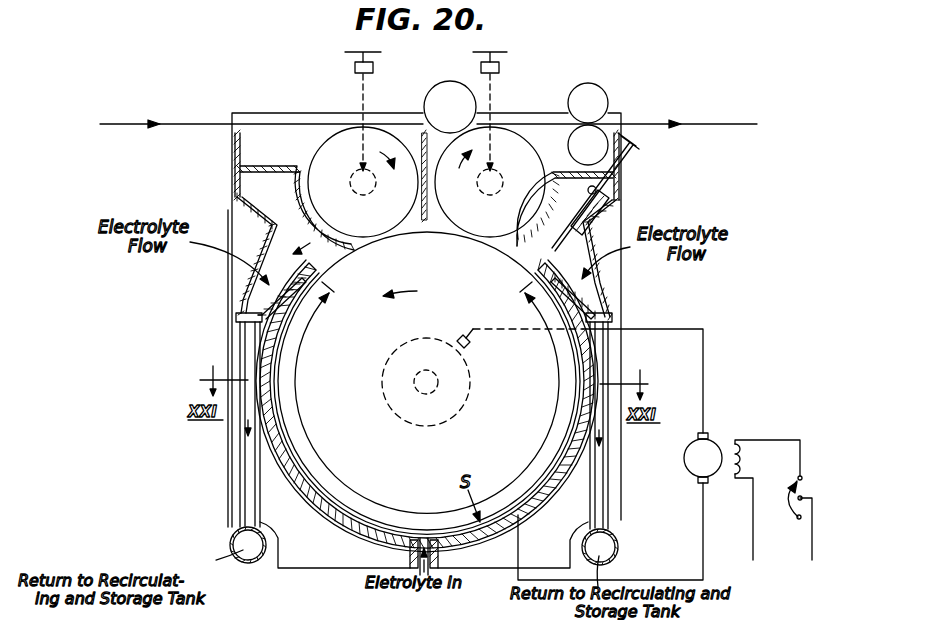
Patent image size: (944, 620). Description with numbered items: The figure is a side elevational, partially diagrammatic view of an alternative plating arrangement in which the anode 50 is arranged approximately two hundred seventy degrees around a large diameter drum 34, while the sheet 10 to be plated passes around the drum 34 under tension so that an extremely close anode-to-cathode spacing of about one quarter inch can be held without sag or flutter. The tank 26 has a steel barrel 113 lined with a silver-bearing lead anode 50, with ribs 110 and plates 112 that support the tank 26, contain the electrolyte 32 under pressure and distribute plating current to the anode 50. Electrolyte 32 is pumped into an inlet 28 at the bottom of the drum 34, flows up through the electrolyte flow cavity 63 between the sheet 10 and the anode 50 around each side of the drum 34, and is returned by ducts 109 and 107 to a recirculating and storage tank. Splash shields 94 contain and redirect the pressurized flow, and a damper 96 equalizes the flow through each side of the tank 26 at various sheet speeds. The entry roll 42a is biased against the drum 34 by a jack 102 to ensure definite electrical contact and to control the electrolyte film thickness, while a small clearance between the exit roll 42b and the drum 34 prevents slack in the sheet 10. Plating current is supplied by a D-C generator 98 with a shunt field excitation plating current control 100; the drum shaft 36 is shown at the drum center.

The sheet 10 is at (128, 123).
The jack 102 is at (362, 84).
The plates 112 is at (235, 160).
The splash shields 94 is at (301, 218).
The entry roll 42a is at (368, 228).
The exit roll 42b is at (496, 228).
The ribs 110 is at (240, 273).
The damper 96 is at (598, 246).
The drum 34 is at (345, 361).
The electrolyte flow cavity 63 is at (278, 414).
The anode 50 is at (300, 473).
The drum shaft 36 is at (468, 403).
The inlet 28 is at (423, 540).
The electrolyte 32 is at (438, 548).
The tank 26 is at (318, 508).
The steel barrel 113 is at (541, 500).
The ducts 109 is at (246, 458).
The ducts 107 is at (229, 528).
The D-C generator 98 is at (708, 446).
The plating current control 100 is at (784, 514).